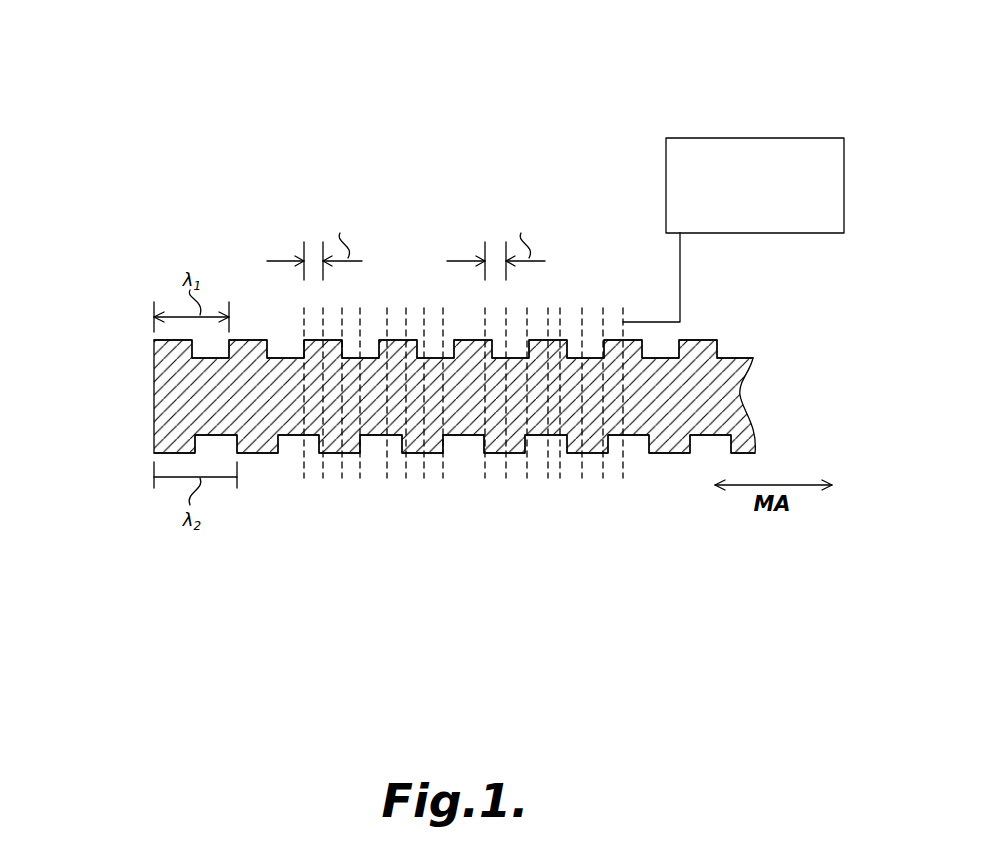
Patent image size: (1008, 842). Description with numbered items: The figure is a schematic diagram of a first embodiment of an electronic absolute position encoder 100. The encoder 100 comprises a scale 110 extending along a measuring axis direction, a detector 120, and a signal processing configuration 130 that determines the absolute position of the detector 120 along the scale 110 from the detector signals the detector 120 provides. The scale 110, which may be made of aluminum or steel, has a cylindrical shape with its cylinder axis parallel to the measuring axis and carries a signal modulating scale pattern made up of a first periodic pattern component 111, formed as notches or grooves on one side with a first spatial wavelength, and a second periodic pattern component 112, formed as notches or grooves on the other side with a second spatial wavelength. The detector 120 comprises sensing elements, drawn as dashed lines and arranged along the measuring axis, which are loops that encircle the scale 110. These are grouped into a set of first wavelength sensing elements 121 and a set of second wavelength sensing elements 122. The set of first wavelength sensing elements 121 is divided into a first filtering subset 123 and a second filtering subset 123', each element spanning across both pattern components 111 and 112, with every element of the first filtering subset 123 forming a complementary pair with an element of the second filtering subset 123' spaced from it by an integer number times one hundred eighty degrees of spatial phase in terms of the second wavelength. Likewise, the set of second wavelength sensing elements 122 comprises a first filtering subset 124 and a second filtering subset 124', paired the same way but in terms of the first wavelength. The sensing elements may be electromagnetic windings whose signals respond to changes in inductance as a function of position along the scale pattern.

The electronic absolute position encoder 100 is at (681, 80).
The scale 110 is at (154, 403).
The first periodic pattern component 111 is at (690, 310).
The second periodic pattern component 112 is at (646, 487).
The detector 120 is at (343, 138).
The set of first wavelength sensing elements 121 is at (287, 205).
The set of second wavelength sensing elements 122 is at (473, 205).
The first filtering subset of first wavelength sensing elements 123 is at (332, 510).
The second filtering subset of first wavelength sensing elements 123' is at (413, 510).
The first filtering subset of second wavelength sensing elements 124 is at (515, 510).
The second filtering subset of second wavelength sensing elements 124' is at (593, 510).
The signal processing configuration 130 is at (802, 137).